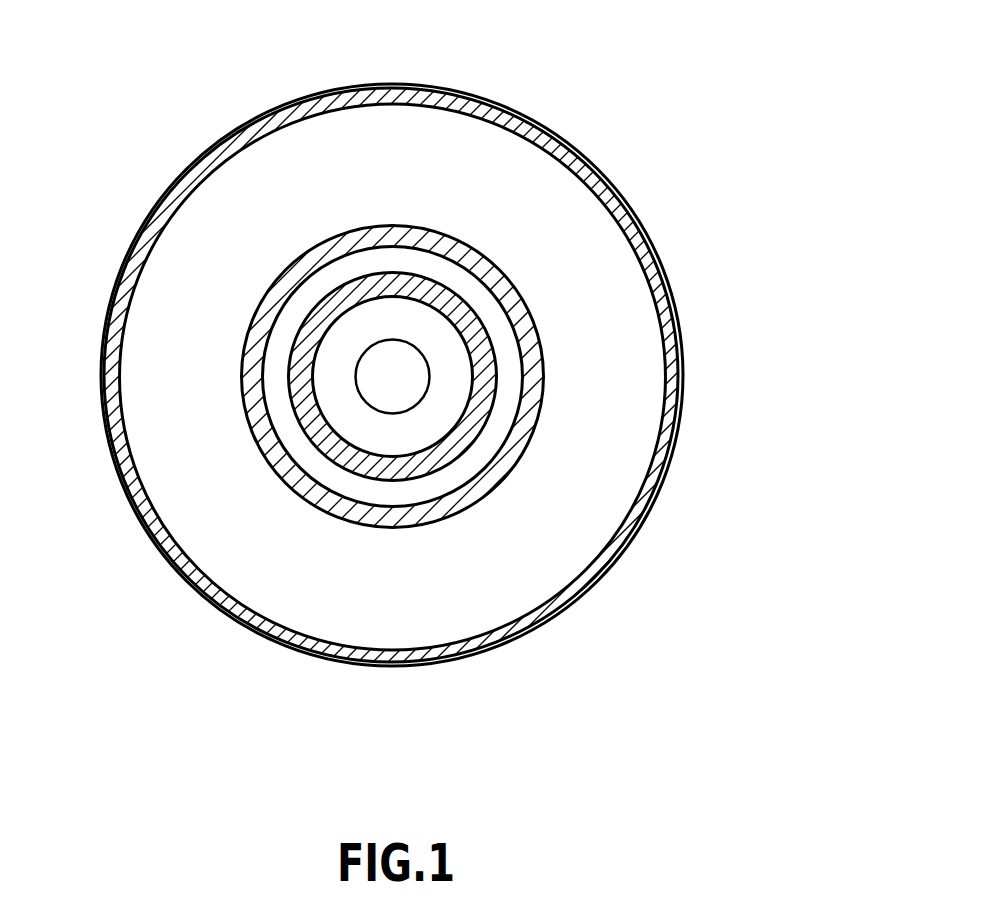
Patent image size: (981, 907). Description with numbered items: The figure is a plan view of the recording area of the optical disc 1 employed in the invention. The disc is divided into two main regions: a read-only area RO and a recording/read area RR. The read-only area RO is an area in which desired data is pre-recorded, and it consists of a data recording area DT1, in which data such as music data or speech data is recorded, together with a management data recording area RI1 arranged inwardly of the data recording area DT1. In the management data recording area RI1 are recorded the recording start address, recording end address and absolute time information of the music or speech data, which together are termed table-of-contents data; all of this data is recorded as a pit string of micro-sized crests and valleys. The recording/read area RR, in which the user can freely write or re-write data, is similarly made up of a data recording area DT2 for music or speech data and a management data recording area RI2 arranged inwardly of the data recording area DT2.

The optical disc 1 is at (82, 215).
The read-only area RO is at (391, 331).
The recording/read area RR is at (707, 164).
The management data recording area RI1 is at (419, 249).
The data recording area DT1 is at (436, 289).
The management data recording area RI2 is at (459, 333).
The data recording area DT2 is at (425, 377).